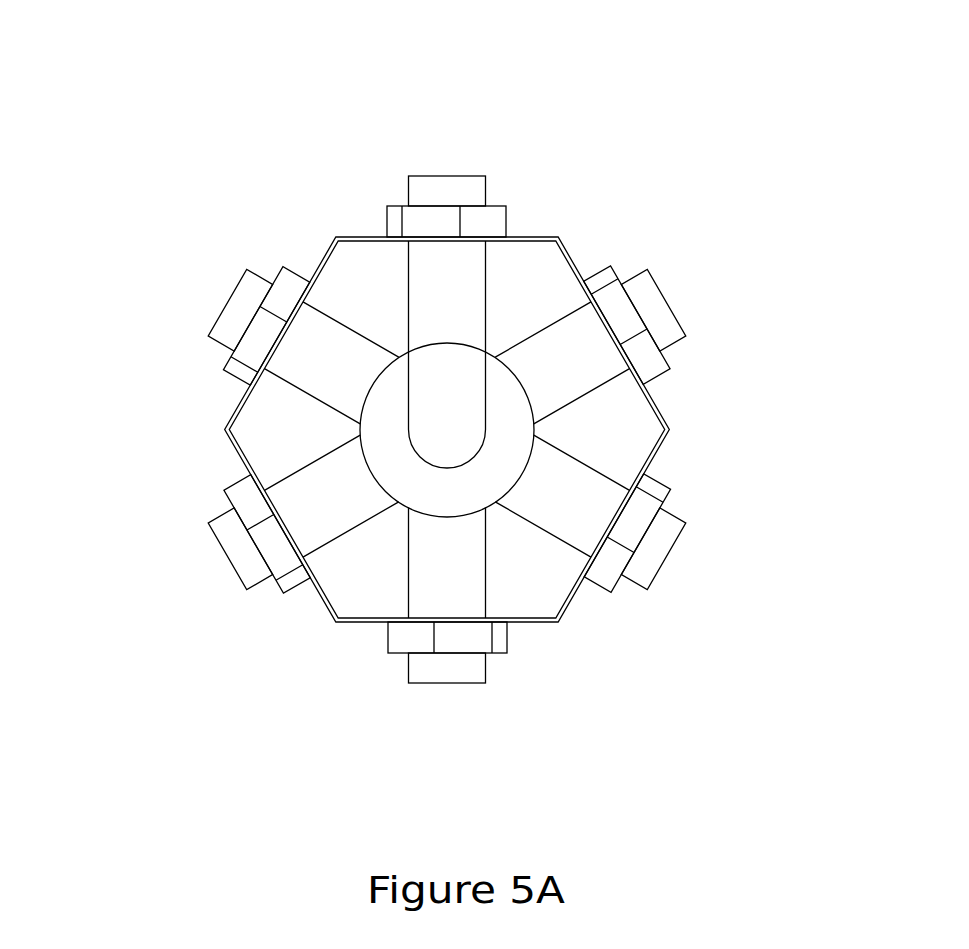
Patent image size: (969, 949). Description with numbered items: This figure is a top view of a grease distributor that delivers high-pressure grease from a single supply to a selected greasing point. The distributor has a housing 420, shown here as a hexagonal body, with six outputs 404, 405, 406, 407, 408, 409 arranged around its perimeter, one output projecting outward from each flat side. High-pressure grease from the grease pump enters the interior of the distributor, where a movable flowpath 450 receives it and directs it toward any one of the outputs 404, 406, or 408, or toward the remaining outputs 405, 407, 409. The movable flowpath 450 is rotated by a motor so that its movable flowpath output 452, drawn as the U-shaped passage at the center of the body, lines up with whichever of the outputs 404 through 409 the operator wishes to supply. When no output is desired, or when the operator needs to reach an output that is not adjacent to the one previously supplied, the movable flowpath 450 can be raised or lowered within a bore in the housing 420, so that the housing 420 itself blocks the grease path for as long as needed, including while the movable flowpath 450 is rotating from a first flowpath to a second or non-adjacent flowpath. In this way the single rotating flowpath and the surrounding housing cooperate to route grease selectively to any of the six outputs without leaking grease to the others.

The output 404 is at (227, 535).
The output 405 is at (668, 330).
The output 406 is at (457, 670).
The output 407 is at (465, 190).
The output 408 is at (648, 570).
The output 409 is at (228, 330).
The housing 420 is at (355, 592).
The movable flowpath 450 is at (450, 345).
The movable flowpath output 452 is at (429, 438).